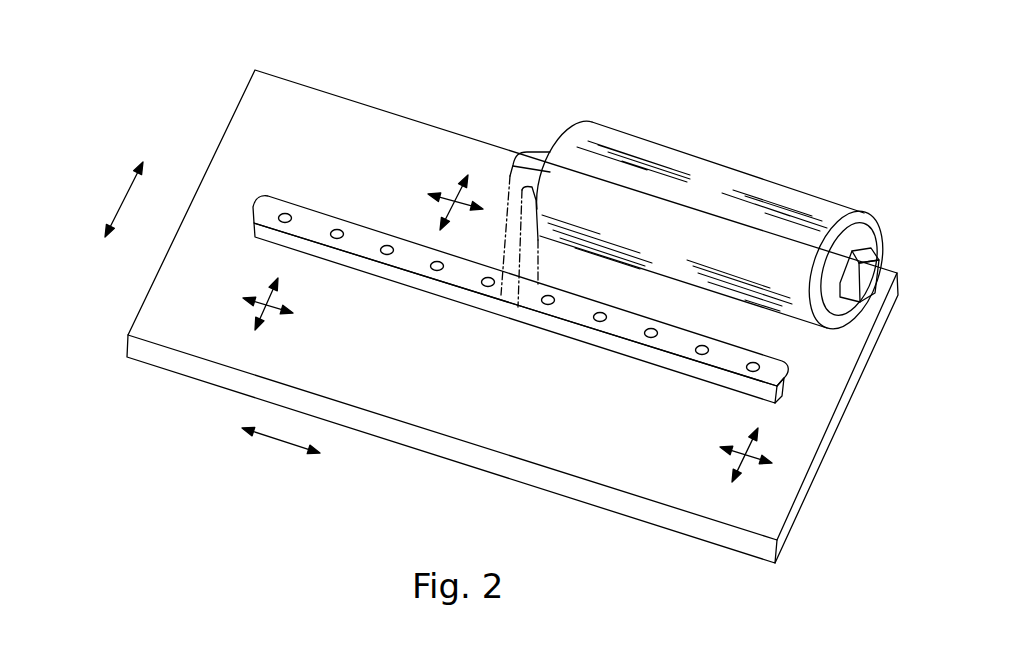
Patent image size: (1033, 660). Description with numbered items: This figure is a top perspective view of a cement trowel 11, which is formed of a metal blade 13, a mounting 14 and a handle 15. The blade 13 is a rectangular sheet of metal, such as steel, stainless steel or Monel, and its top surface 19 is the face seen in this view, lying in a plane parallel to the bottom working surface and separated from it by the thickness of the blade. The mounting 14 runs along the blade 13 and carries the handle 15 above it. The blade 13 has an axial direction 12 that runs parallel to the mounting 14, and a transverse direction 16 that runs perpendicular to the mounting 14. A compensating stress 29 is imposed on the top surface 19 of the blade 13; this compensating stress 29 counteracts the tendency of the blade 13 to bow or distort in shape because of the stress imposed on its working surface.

The cement trowel 11 is at (486, 113).
The axial direction 12 is at (282, 442).
The blade 13 is at (348, 112).
The mounting 14 is at (507, 292).
The handle 15 is at (693, 165).
The transverse direction 16 is at (122, 193).
The top surface 19 is at (274, 140).
The compensating stress 29 is at (452, 188).